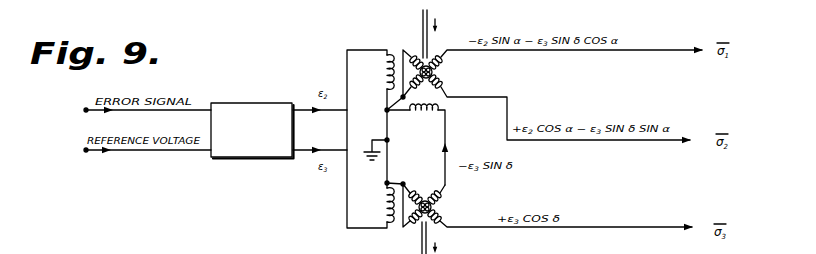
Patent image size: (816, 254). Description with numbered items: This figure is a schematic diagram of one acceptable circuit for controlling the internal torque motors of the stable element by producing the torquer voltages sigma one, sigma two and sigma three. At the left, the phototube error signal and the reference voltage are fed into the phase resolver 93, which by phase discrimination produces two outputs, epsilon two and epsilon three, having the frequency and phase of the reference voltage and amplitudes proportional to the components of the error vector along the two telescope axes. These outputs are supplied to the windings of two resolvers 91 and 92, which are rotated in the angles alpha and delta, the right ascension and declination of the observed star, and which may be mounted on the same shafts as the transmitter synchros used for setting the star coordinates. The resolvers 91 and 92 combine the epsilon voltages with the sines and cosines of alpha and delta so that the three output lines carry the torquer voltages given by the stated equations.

The resolver 91 is at (445, 73).
The resolver 92 is at (452, 202).
The phase resolver 93 is at (248, 159).